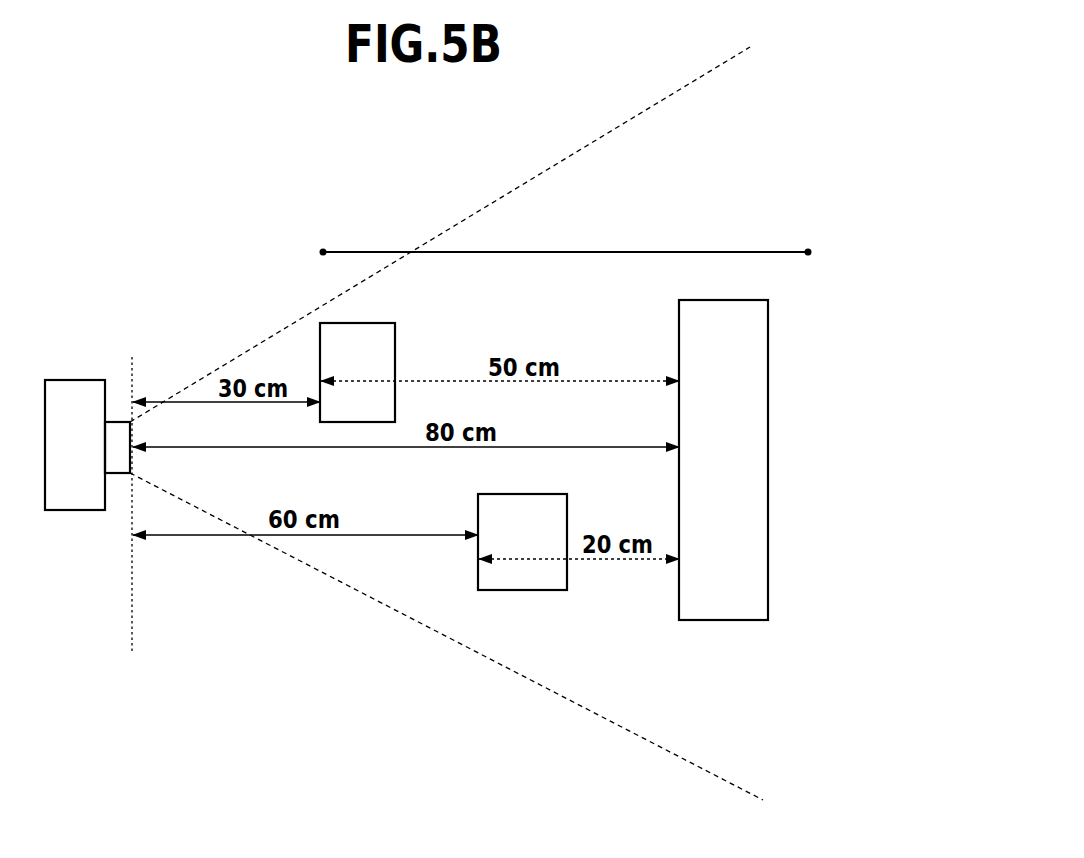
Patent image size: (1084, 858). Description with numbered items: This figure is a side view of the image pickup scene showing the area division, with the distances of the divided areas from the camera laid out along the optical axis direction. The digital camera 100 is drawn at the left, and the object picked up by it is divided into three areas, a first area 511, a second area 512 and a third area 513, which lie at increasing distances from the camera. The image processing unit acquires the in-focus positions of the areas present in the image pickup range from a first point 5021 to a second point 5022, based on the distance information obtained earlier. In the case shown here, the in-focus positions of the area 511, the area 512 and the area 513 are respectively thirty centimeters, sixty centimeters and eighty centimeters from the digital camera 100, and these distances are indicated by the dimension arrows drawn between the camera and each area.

The digital camera 100 is at (75, 380).
The area 511 is at (398, 327).
The area 512 is at (478, 496).
The area 513 is at (679, 333).
The point 5021 is at (318, 252).
The point 5022 is at (808, 248).